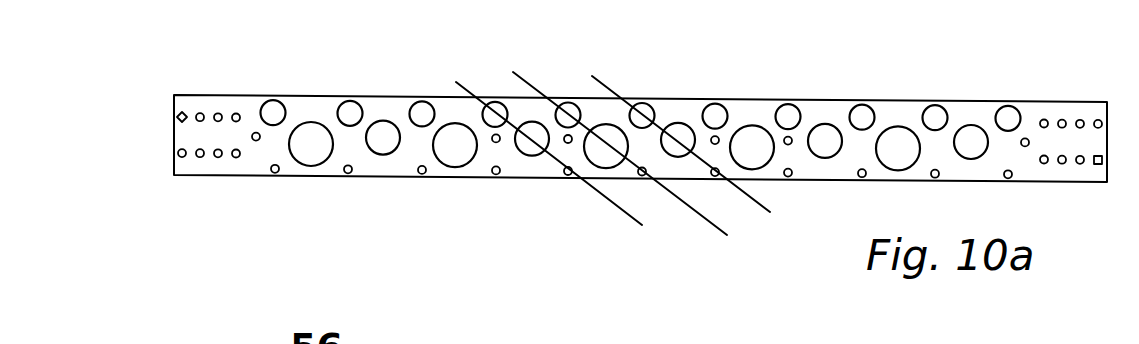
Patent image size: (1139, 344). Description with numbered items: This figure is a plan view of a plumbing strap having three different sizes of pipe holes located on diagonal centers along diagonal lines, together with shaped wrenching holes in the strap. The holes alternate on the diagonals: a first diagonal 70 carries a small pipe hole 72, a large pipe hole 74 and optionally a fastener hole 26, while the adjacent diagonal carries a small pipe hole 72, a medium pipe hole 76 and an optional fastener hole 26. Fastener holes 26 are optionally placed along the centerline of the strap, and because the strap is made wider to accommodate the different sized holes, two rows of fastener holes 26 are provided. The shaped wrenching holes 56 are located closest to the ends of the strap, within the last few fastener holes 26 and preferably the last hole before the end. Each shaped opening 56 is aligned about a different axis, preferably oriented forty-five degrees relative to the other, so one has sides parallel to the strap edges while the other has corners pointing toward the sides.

The fastener hole 26 is at (182, 157).
The shaped wrenching hole 56 is at (182, 112).
The first diagonal 70 is at (630, 167).
The small pipe hole 72 is at (276, 108).
The large pipe hole 74 is at (310, 163).
The medium pipe hole 76 is at (387, 151).